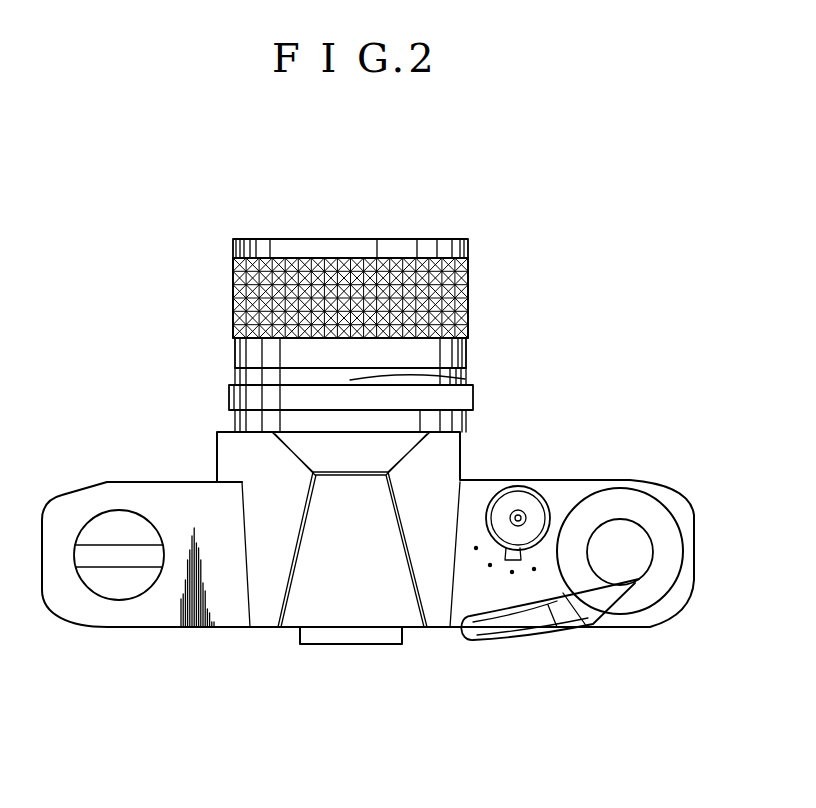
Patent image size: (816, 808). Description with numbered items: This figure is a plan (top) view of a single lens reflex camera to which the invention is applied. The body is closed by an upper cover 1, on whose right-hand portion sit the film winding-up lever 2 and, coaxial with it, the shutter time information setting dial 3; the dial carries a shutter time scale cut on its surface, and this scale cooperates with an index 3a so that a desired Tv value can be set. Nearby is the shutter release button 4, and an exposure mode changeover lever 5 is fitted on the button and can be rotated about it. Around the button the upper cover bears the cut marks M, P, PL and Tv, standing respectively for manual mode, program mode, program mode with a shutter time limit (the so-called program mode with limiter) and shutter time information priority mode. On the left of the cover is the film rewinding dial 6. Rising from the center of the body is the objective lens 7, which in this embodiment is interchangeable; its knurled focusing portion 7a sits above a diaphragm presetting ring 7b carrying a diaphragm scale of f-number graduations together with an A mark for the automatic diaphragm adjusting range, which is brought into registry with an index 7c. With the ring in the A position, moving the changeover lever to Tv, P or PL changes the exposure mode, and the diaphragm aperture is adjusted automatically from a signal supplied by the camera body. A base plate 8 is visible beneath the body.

The upper cover 1 is at (410, 613).
The film winding-up lever 2 is at (502, 630).
The shutter time information setting dial 3 is at (607, 502).
The index 3a is at (547, 553).
The shutter release button 4 is at (518, 498).
The exposure mode changeover lever 5 is at (505, 559).
The film rewinding dial 6 is at (93, 557).
The objective lens 7 is at (336, 252).
The focusing ring (knurled) 7a is at (468, 285).
The diaphragm presetting ring 7b is at (229, 398).
The index 7c is at (470, 380).
The base plate 8 is at (350, 638).